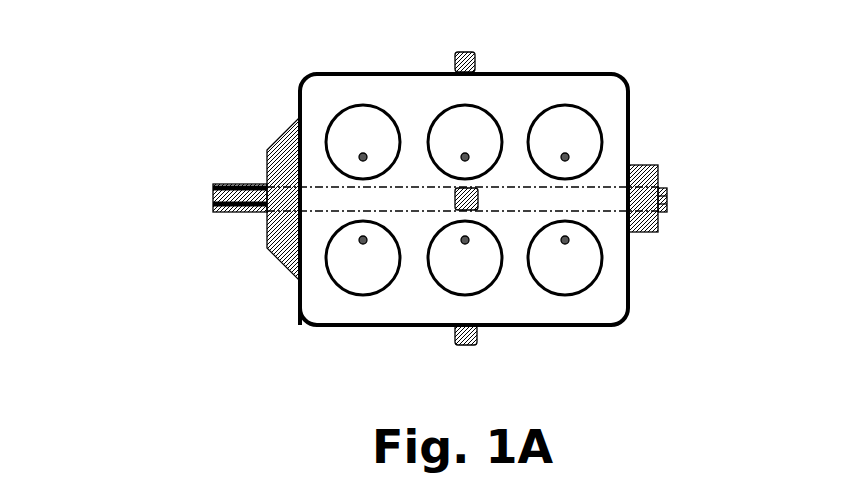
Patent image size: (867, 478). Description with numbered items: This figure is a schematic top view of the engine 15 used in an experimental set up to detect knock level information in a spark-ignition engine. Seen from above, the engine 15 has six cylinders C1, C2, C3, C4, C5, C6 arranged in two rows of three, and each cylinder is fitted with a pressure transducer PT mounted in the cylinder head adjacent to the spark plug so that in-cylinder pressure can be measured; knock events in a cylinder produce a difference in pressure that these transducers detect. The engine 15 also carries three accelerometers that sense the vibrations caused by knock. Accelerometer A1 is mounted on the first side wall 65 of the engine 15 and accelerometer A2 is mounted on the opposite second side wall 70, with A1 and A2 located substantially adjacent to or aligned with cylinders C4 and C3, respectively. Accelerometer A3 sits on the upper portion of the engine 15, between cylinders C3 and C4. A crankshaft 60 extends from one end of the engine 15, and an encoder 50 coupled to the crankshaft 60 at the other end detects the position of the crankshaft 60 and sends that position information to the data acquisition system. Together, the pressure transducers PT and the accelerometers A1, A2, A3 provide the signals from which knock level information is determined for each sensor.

The engine 15 is at (226, 56).
The first side wall 65 is at (372, 73).
The second side wall 70 is at (363, 326).
The crankshaft 60 is at (213, 190).
The encoder 50 is at (654, 233).
The accelerometer A1 is at (465, 52).
The accelerometer A2 is at (464, 345).
The accelerometer A3 is at (455, 200).
The pressure transducer PT is at (363, 157).
The cylinder C1 is at (565, 258).
The cylinder C2 is at (565, 142).
The cylinder C3 is at (465, 258).
The cylinder C4 is at (465, 142).
The cylinder C5 is at (363, 258).
The cylinder C6 is at (363, 142).